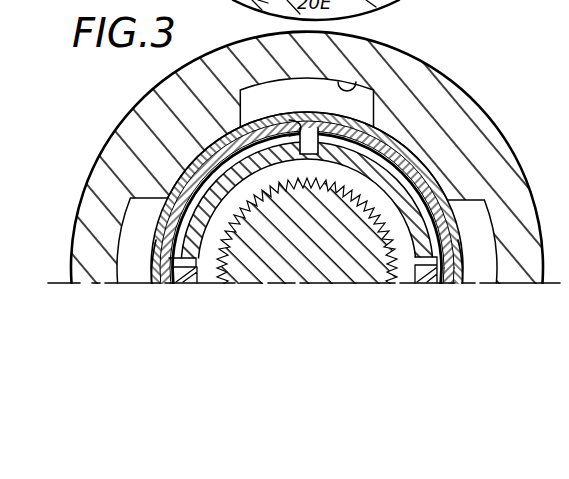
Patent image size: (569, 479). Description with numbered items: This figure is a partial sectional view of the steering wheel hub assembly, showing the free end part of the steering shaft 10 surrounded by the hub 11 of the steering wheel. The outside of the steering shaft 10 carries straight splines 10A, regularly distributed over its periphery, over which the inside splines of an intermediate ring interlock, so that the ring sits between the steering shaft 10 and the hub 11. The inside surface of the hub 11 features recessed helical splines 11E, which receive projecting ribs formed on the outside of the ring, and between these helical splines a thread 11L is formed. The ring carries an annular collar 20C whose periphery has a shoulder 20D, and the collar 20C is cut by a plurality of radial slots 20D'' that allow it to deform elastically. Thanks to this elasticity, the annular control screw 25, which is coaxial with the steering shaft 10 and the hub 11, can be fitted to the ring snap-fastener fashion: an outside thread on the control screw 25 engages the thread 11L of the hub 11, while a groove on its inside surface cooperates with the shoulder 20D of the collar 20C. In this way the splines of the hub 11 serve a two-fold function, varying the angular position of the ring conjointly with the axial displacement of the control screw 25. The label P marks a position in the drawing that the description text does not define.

The hub 11 is at (478, 96).
The recessed helical splines 11E is at (353, 87).
The thread 11L is at (232, 139).
The steering shaft 10 is at (316, 250).
The straight splines 10A is at (237, 196).
The annular collar 20C is at (437, 226).
The control screw 25 is at (431, 186).
The peripheral shoulder 20D is at (307, 266).
The radial slots 20D'' is at (308, 186).
The pole gap P is at (289, 140).